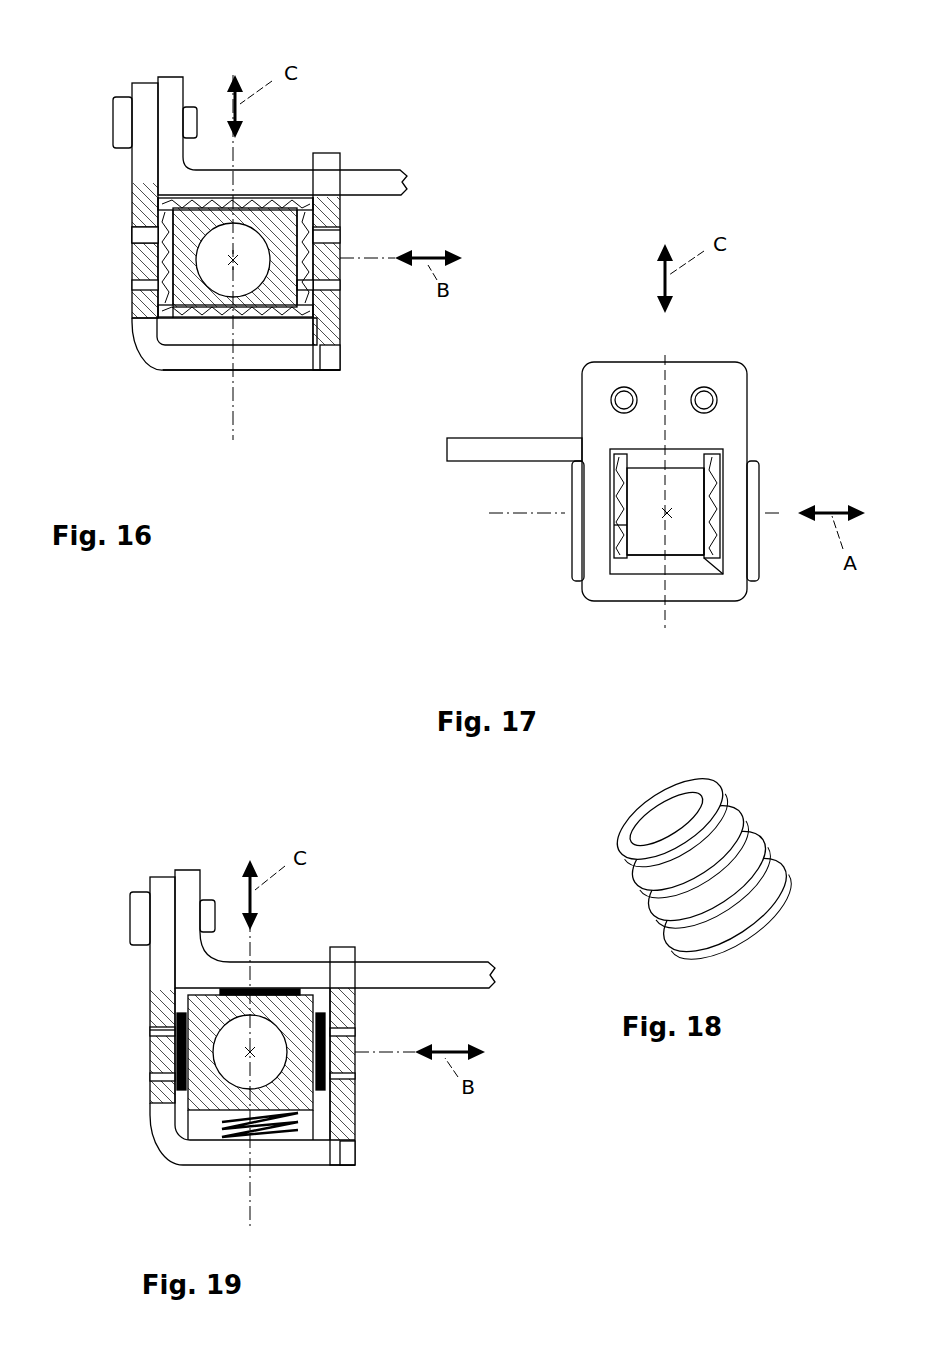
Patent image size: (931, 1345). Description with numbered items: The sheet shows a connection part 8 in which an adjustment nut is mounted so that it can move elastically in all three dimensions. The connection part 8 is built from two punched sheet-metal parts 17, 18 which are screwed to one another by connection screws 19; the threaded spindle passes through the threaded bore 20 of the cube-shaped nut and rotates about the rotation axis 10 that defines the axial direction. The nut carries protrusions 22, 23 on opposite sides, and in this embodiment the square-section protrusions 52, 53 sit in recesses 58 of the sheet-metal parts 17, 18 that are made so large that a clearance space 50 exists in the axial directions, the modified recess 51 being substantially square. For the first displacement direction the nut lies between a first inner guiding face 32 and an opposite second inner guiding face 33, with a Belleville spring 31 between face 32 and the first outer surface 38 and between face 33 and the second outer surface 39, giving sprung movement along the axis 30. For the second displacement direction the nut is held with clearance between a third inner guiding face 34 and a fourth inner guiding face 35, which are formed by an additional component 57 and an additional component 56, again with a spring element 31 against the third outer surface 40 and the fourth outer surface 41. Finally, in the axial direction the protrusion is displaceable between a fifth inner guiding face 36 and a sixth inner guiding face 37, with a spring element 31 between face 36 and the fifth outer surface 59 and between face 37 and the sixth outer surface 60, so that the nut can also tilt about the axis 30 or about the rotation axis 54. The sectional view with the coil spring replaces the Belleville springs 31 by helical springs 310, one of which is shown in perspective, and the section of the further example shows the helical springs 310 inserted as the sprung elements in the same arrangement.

In FIG. 16, the connection part 8 is at (298, 121).
In FIG. 17, the connection part 8 is at (593, 316).
In FIG. 19, the connection part 8 is at (315, 916).
In FIG. 16, the rotation axis 10 is at (137, 237).
In FIG. 17, the rotation axis 10 is at (628, 476).
In FIG. 19, the rotation axis 10 is at (150, 1030).
In FIG. 16, the sheet-metal part 17 is at (150, 352).
In FIG. 17, the sheet-metal part 17 is at (728, 431).
In FIG. 19, the sheet-metal part 17 is at (168, 1145).
In FIG. 16, the sheet-metal part 18 is at (372, 184).
In FIG. 17, the sheet-metal part 18 is at (513, 447).
In FIG. 19, the sheet-metal part 18 is at (430, 978).
In FIG. 16, the connection screws 19 is at (182, 100).
In FIG. 17, the connection screws 19 is at (626, 398).
In FIG. 19, the connection screws 19 is at (140, 910).
In FIG. 16, the threaded bore 20 is at (342, 231).
In FIG. 19, the threaded bore 20 is at (173, 993).
In FIG. 19, the protrusion 22 is at (148, 1080).
In FIG. 19, the protrusion 23 is at (358, 1077).
In FIG. 16, the axis 30 is at (288, 261).
In FIG. 17, the axis 30 is at (665, 511).
In FIG. 19, the axis 30 is at (283, 1025).
In FIG. 16, the Belleville spring 31 is at (131, 203).
In FIG. 16, the first inner guiding face 32 is at (162, 332).
In FIG. 19, the first inner guiding face 32 is at (177, 1093).
In FIG. 16, the second inner guiding face 33 is at (342, 328).
In FIG. 19, the second inner guiding face 33 is at (337, 1093).
In FIG. 16, the third inner guiding face 34 is at (309, 369).
In FIG. 16, the fourth inner guiding face 35 is at (170, 200).
In FIG. 17, the fifth inner guiding face 36 is at (725, 542).
In FIG. 17, the sixth inner guiding face 37 is at (614, 525).
In FIG. 16, the first outer surface 38 is at (178, 324).
In FIG. 19, the first outer surface 38 is at (192, 1112).
In FIG. 16, the second outer surface 39 is at (342, 311).
In FIG. 19, the second outer surface 39 is at (323, 1075).
In FIG. 16, the third outer surface 40 is at (335, 346).
In FIG. 16, the fourth outer surface 41 is at (122, 110).
In FIG. 19, the fourth outer surface 41 is at (197, 917).
In FIG. 16, the clearance space 50 is at (133, 229).
In FIG. 17, the clearance space 50 is at (680, 459).
In FIG. 17, the recess 51 is at (707, 572).
In FIG. 16, the protrusion 52 is at (125, 292).
In FIG. 17, the protrusion 52 is at (690, 494).
In FIG. 16, the protrusion 53 is at (355, 291).
In FIG. 16, the rotation axis 54 is at (237, 427).
In FIG. 17, the rotation axis 54 is at (662, 335).
In FIG. 16, the additional component 56 is at (292, 257).
In FIG. 19, the additional component 56 is at (263, 990).
In FIG. 16, the additional component 57 is at (249, 336).
In FIG. 16, the recesses 58 is at (145, 235).
In FIG. 17, the recesses 58 is at (640, 457).
In FIG. 17, the fifth outer surface 59 is at (700, 529).
In FIG. 17, the sixth outer surface 60 is at (633, 560).
In FIG. 18, the helical spring 310 is at (738, 917).
In FIG. 19, the helical spring 310 is at (300, 990).